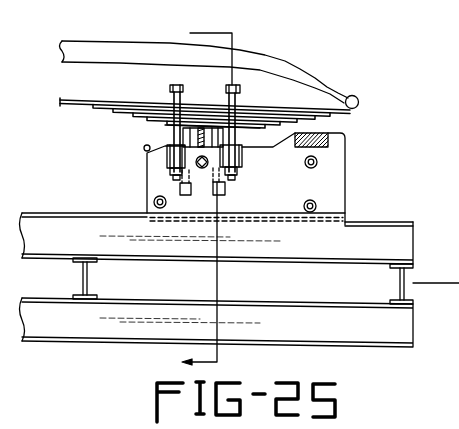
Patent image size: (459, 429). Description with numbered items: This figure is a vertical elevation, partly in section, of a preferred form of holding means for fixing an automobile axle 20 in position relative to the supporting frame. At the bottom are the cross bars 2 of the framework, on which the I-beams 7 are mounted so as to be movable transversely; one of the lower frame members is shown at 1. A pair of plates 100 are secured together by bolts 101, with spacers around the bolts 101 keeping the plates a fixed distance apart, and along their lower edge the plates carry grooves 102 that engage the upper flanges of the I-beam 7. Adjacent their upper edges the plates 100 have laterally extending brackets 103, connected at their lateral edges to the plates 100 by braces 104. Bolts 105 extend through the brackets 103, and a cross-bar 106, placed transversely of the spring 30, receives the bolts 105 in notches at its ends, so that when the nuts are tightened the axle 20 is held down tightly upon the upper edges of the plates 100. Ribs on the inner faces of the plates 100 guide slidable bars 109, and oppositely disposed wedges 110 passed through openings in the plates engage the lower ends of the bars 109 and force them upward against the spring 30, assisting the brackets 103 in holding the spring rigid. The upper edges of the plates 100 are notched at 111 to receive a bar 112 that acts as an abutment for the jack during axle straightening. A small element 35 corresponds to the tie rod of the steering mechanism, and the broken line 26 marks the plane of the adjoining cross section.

The lower rail 1 is at (388, 335).
The cross bars 2 is at (90, 289).
The I-beams 7 is at (385, 235).
The axle 20 is at (222, 128).
The section line 26— 26 is at (193, 194).
The spring 30 is at (282, 108).
The tie rod 35 is at (144, 150).
The plates 100 is at (338, 207).
The bolts 101 is at (153, 201).
The grooves 102 is at (340, 228).
The brackets 103 is at (240, 168).
The braces 104 is at (245, 153).
The bolts 105 is at (176, 87).
The cross-bar 106 is at (225, 101).
The slidable bars 109 is at (215, 132).
The wedges 110 is at (226, 185).
The notches 111 is at (331, 132).
The bar 112 is at (306, 133).